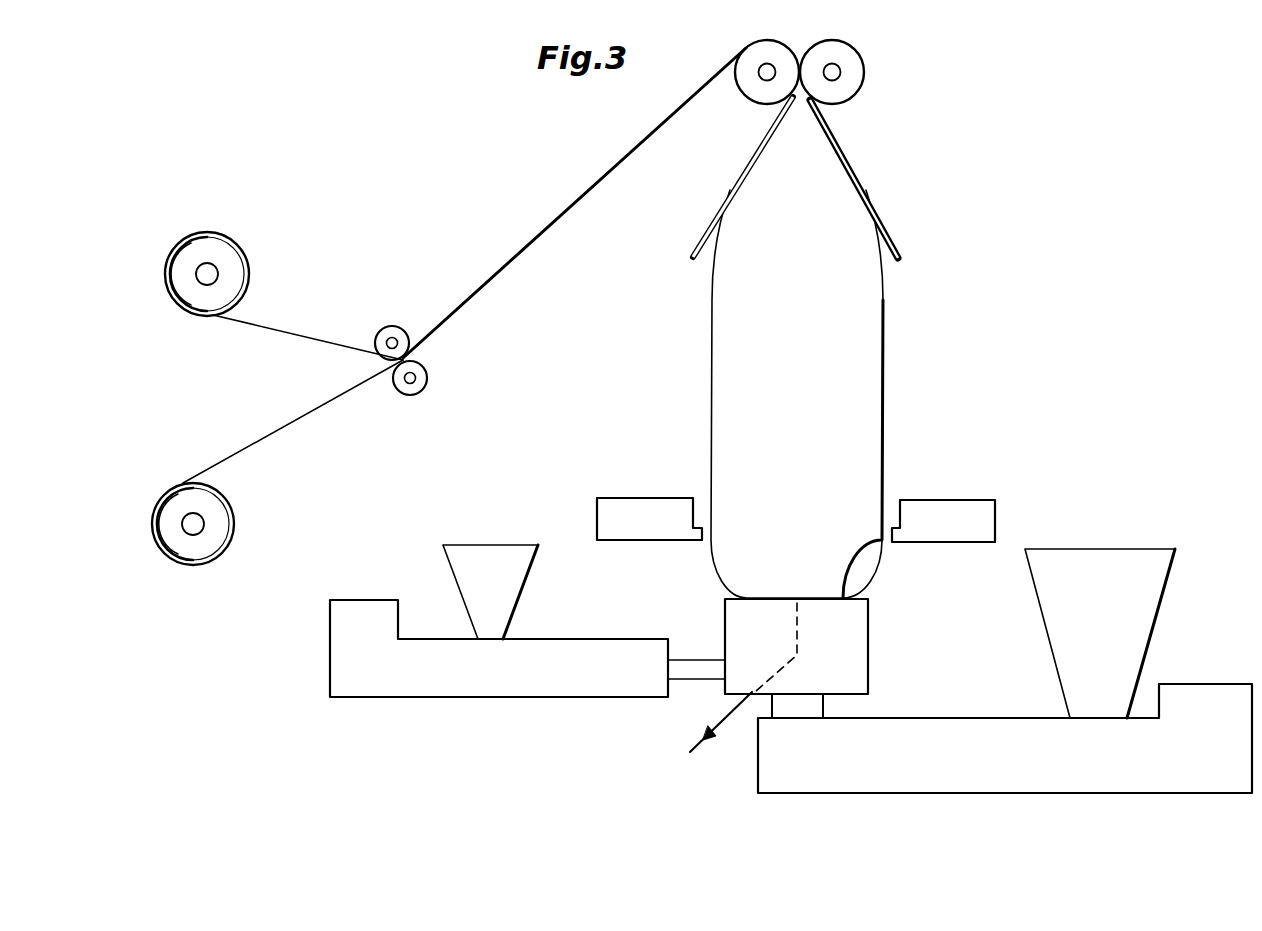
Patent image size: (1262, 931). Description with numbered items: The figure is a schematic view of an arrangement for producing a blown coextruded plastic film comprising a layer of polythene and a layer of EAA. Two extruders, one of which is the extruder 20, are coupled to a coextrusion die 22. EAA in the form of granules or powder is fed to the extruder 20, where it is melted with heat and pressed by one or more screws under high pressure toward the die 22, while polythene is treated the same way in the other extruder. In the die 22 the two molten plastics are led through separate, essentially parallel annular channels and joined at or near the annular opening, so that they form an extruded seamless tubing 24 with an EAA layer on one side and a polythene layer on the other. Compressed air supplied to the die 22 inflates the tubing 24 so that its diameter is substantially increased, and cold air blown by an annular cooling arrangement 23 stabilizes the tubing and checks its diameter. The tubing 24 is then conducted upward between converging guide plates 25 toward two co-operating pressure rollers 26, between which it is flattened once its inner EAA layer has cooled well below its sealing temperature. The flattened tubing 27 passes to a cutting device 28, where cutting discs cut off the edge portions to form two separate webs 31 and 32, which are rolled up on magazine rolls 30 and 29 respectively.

The extruder 20 is at (404, 686).
The coextrusion die 22 is at (733, 613).
The annular cooling arrangement 23 is at (645, 472).
The extruded seamless tubing 24 is at (873, 373).
The converging guide plates 25 is at (848, 157).
The co-operating pressure rollers 26 is at (813, 55).
The flattened tubing 27 is at (562, 213).
The cutting device 28 is at (418, 365).
The magazine roll 29 is at (230, 250).
The magazine roll 30 is at (227, 527).
The web 31 is at (267, 437).
The web 32 is at (258, 332).